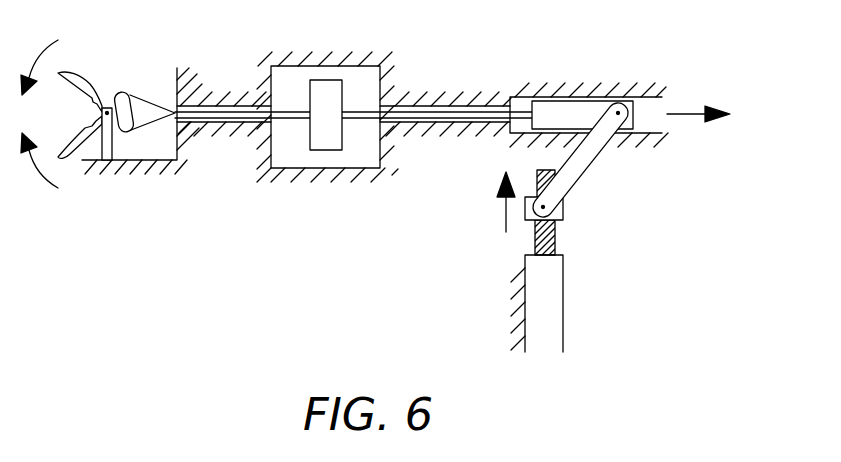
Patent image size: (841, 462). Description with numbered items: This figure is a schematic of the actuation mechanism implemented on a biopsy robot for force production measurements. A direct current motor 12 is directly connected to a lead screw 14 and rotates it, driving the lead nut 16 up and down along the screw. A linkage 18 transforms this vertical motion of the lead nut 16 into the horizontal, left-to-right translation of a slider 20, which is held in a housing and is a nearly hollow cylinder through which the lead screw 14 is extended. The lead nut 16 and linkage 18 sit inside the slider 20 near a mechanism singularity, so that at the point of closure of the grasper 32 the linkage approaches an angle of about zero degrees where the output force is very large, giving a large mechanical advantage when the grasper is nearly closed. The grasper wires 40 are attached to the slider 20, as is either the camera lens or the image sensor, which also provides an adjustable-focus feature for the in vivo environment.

The motor 12 is at (547, 296).
The lead screw 14 is at (547, 238).
The lead nut 16 is at (557, 213).
The linkage 18 is at (577, 170).
The slider 20 is at (563, 110).
The grasper 32 is at (73, 146).
The grasper wires 40 is at (153, 100).